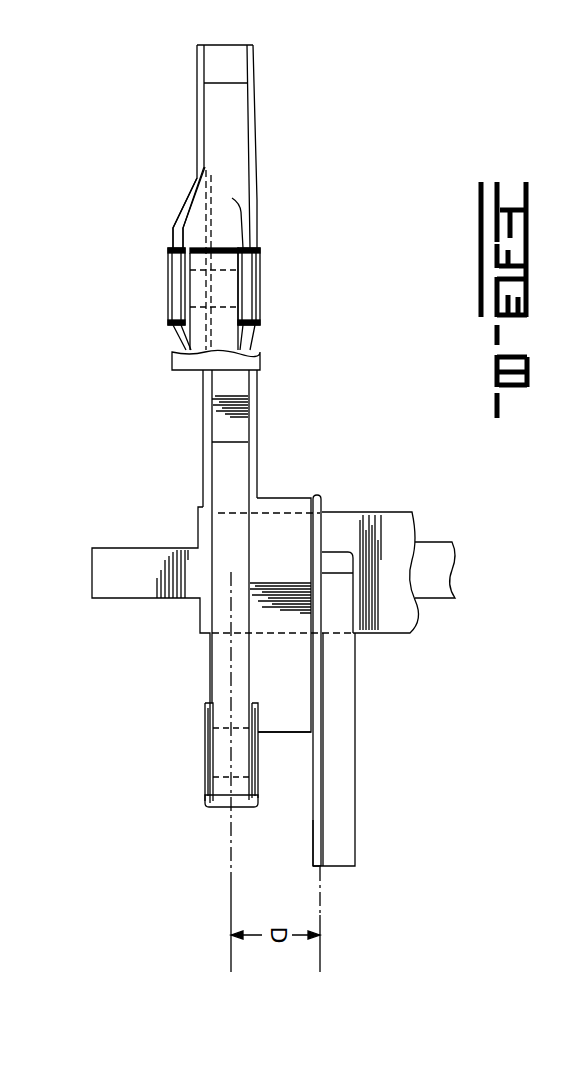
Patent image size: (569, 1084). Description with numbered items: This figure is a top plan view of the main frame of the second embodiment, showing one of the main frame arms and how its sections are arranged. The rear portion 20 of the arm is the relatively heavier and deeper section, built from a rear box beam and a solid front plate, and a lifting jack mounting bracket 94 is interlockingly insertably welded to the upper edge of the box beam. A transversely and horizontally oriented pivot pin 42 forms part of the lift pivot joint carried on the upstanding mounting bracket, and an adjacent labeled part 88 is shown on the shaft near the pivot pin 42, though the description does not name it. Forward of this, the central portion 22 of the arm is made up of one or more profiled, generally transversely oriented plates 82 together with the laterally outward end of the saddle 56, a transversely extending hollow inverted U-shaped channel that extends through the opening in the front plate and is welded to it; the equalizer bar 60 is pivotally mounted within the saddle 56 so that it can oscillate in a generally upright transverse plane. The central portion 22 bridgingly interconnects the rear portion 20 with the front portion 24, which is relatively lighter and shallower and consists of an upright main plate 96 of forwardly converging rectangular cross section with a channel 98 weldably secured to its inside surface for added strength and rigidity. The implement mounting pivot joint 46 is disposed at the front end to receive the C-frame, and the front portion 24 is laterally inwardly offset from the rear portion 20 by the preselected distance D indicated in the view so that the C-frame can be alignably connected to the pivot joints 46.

The rear portion 20 is at (163, 127).
The central portion 22 is at (287, 546).
The front portion 24 is at (358, 832).
The pivot pin 42 is at (170, 264).
The implement mounting pivot joint 46 is at (203, 788).
The saddle 56 is at (385, 523).
The equalizer bar 60 is at (122, 548).
The plates 82 is at (280, 718).
The collar 88 is at (176, 364).
The lifting jack mounting bracket 94 is at (174, 185).
The main plate 96 is at (313, 830).
The channel 98 is at (358, 742).